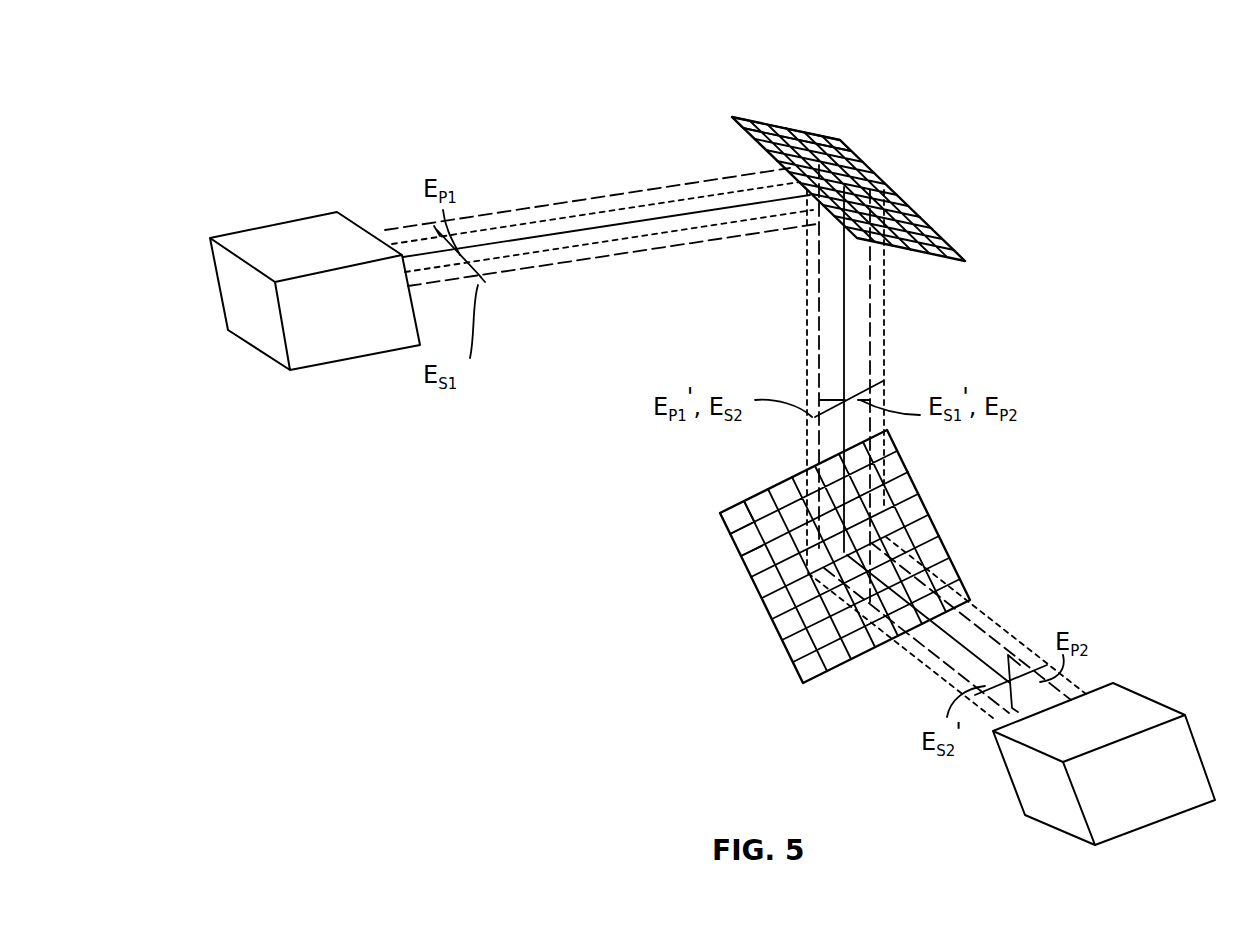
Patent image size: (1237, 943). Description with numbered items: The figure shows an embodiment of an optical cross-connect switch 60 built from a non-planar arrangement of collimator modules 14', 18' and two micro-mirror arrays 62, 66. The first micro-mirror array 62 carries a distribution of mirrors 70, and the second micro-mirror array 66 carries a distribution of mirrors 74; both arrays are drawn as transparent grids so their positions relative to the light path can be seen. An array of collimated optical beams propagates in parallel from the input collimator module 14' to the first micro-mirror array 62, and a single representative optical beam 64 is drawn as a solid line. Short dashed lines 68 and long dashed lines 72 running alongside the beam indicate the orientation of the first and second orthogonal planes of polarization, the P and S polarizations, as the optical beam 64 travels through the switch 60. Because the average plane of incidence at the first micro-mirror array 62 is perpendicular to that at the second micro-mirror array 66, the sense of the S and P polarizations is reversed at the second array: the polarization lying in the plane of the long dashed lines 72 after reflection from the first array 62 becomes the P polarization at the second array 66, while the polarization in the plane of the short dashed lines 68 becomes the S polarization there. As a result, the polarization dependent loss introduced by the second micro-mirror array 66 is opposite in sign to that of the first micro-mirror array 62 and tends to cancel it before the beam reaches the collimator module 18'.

The input collimator module 14' is at (315, 257).
The collimator module 18' is at (1113, 729).
The optical cross-connect switch 60 is at (1166, 257).
The first micro-mirror array 62 is at (801, 103).
The optical beam 64 is at (536, 238).
The second micro-mirror array 66 is at (955, 510).
The short dashed lines 68 is at (597, 212).
The mirrors 70 is at (851, 148).
The long dashed lines 72 is at (678, 185).
The mirrors 74 is at (742, 540).